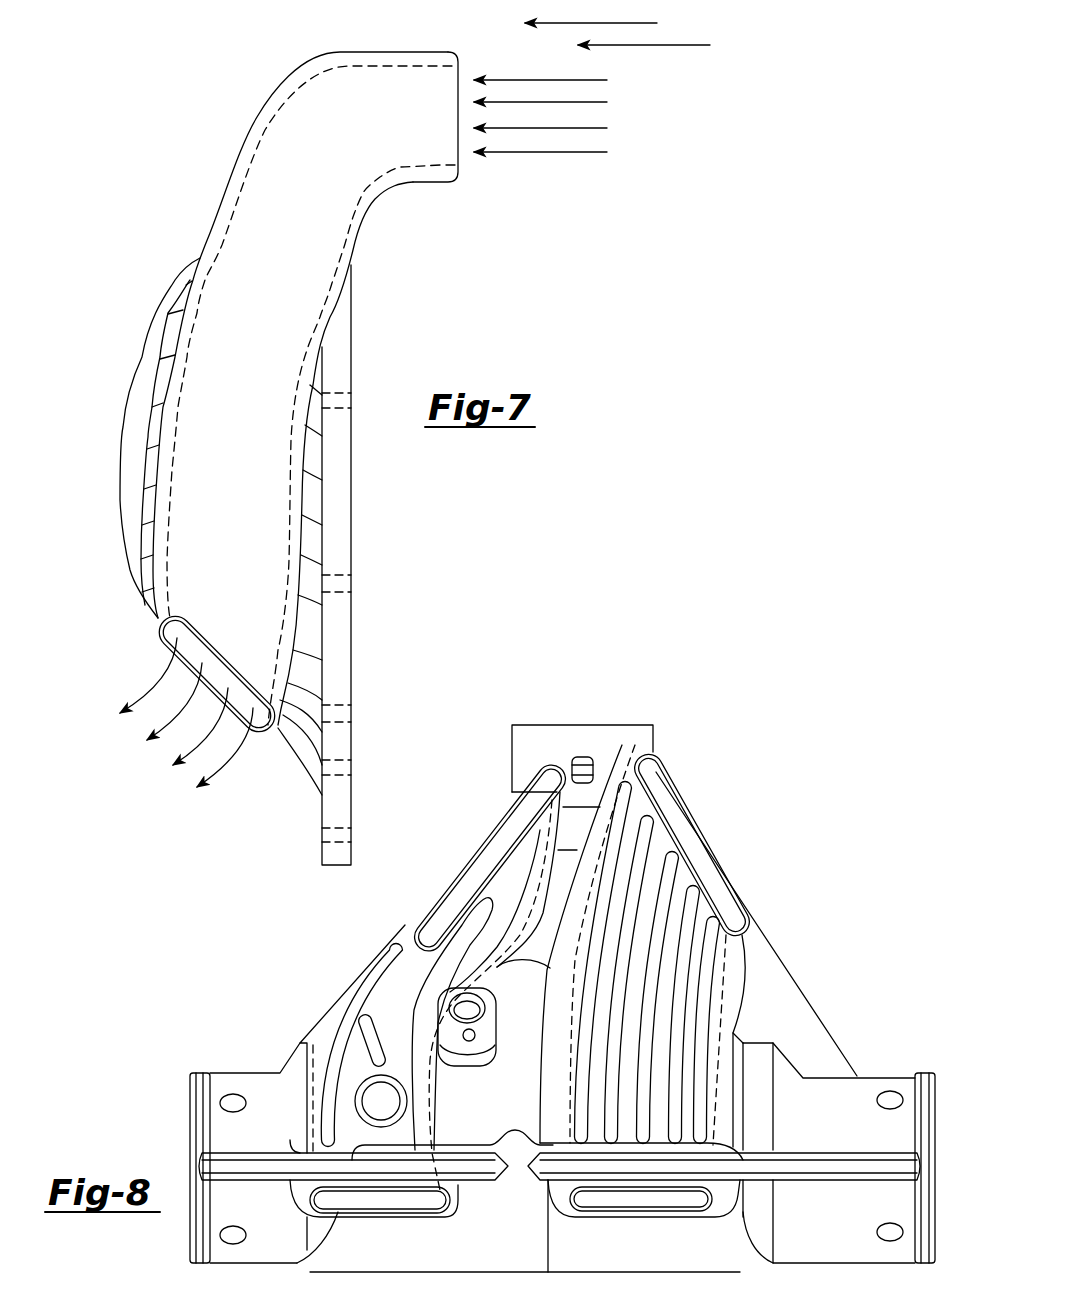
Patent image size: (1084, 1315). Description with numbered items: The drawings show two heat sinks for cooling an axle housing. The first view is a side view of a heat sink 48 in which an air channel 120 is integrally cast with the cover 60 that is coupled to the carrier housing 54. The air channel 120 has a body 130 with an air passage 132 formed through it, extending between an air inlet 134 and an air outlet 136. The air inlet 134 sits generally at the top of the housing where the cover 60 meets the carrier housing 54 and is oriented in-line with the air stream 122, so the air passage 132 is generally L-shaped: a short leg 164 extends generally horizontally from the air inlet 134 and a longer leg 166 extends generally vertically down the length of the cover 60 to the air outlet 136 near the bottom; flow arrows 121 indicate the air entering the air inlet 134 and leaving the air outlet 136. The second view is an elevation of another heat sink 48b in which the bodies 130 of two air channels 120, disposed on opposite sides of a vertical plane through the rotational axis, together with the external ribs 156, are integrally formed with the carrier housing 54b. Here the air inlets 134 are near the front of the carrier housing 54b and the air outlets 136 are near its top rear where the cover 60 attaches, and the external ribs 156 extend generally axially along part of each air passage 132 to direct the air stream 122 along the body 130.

In FIG. 7, the heat sink 48 is at (133, 178).
In FIG. 8, the heat sink 48b is at (700, 777).
In FIG. 7, the air channel 120 is at (403, 43).
In FIG. 8, the air channel 120 is at (370, 967).
In FIG. 7, the air flow 121 is at (590, 153).
In FIG. 7, the air stream 122 is at (702, 17).
In FIG. 7, the body 130 is at (163, 565).
In FIG. 8, the body 130 is at (437, 947).
In FIG. 7, the air passage 132 is at (283, 138).
In FIG. 8, the air passage 132 is at (517, 817).
In FIG. 7, the air inlet 134 is at (460, 155).
In FIG. 8, the air inlet 134 is at (472, 887).
In FIG. 7, the air outlet 136 is at (162, 637).
In FIG. 8, the air outlet 136 is at (380, 1197).
In FIG. 8, the external ribs 156 is at (413, 1023).
In FIG. 7, the short leg 164 is at (390, 153).
In FIG. 7, the longer leg 166 is at (307, 258).
In FIG. 7, the cover 60 is at (322, 868).
In FIG. 8, the carrier housing 54 is at (847, 1050).
In FIG. 8, the carrier housing 54b is at (230, 1080).